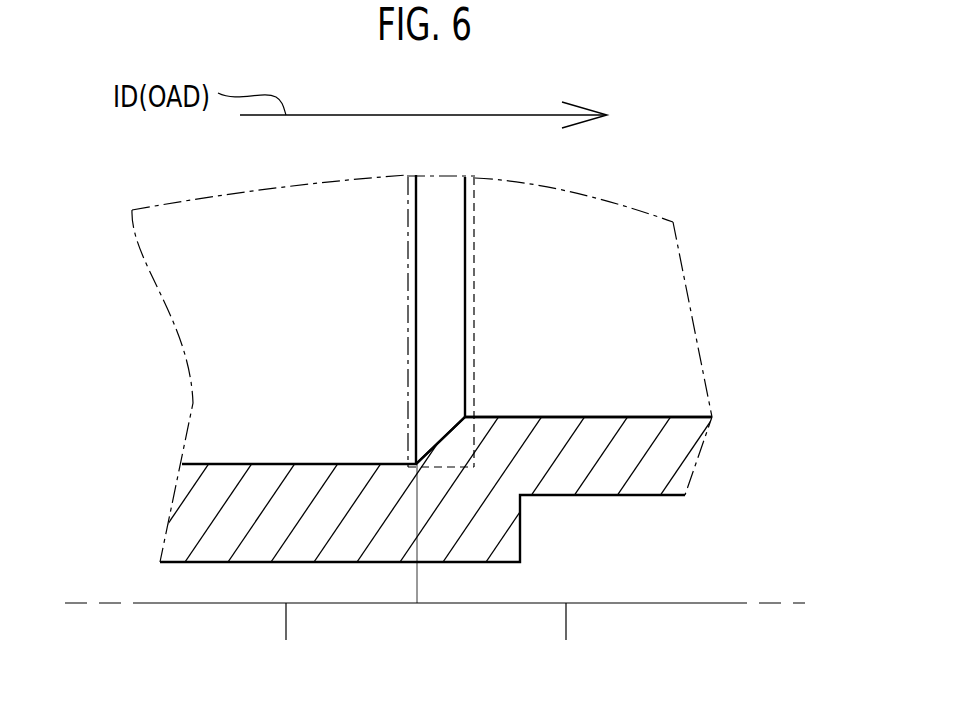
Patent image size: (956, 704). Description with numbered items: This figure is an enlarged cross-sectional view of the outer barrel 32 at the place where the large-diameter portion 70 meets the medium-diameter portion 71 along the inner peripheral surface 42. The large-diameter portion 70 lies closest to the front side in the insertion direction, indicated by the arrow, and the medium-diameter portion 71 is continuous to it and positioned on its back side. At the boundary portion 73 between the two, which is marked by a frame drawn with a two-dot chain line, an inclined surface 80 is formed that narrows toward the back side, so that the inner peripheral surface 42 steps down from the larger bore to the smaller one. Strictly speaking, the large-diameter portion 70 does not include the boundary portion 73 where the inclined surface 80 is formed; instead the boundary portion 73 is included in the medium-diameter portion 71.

The outer barrel 32 is at (712, 458).
The inner peripheral surface 42 is at (655, 417).
The boundary portion 73 is at (476, 252).
The inclined surface 80 is at (448, 432).
The large-diameter portion 70 is at (286, 641).
The medium-diameter portion 71 is at (565, 641).